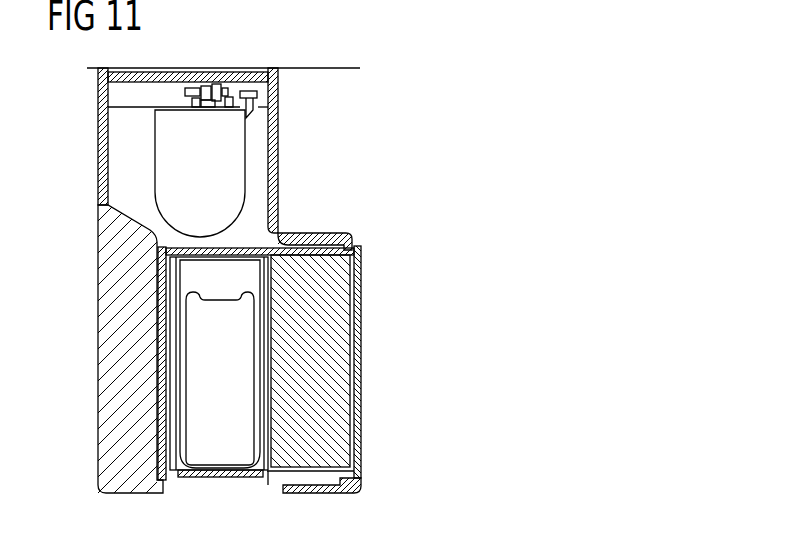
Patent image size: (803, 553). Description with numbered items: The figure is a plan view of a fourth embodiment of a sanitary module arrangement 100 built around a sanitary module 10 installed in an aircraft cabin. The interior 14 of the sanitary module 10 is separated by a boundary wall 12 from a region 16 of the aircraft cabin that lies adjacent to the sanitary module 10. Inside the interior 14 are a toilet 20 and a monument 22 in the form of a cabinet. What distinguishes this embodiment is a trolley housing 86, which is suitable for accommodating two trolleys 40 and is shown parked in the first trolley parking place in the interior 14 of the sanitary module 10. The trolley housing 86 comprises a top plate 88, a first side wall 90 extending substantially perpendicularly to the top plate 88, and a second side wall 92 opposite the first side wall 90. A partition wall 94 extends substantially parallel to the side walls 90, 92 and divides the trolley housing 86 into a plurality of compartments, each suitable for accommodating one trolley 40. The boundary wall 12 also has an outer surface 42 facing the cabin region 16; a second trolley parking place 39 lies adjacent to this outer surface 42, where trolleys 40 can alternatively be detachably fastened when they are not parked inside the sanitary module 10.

The sanitary module 10 is at (297, 116).
The sanitary module arrangement 100 is at (382, 178).
The region of the aircraft cabin 16 is at (403, 243).
The interior 14 is at (141, 193).
The toilet 20 is at (215, 175).
The monument 22 is at (108, 318).
The second side wall 92 is at (162, 372).
The trolley housing 86 is at (287, 250).
The boundary wall 12 is at (366, 327).
The first side wall 90 is at (358, 280).
The outer surface 42 is at (363, 438).
The second trolley parking place 39 is at (419, 370).
The top plate 88 is at (285, 345).
The trolley 40 is at (234, 396).
The partition wall 94 is at (283, 440).